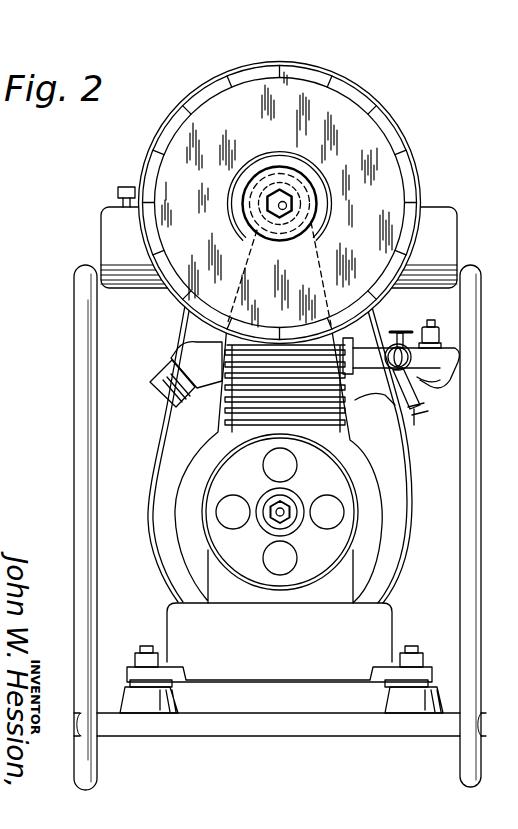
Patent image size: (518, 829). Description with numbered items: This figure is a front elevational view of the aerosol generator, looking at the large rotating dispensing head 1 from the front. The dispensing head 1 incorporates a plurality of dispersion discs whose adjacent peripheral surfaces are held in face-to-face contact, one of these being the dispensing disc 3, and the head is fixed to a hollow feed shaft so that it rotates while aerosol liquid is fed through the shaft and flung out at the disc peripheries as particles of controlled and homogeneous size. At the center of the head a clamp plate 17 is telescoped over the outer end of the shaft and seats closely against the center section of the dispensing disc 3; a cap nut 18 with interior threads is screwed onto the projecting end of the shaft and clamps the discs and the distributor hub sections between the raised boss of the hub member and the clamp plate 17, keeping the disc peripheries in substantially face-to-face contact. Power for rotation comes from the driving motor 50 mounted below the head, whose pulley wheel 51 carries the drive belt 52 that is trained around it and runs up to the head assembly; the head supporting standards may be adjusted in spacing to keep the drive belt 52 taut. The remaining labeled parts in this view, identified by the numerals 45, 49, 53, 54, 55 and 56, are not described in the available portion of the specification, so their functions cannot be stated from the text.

The dispensing head 1 is at (288, 198).
The dispensing disc 3 is at (385, 168).
The clamp plate 17 is at (290, 165).
The cap nut 18 is at (261, 216).
The wheel rim band 45 is at (361, 79).
The rim segments 49 is at (212, 82).
The driving motor 50 is at (153, 585).
The pulley wheel 51 is at (330, 484).
The drive belt 52 is at (217, 389).
The hub ring 53 is at (280, 223).
The bottom cross rail 54 is at (307, 743).
The mounting feet 55 is at (179, 700).
The frame tubes 56 is at (76, 522).